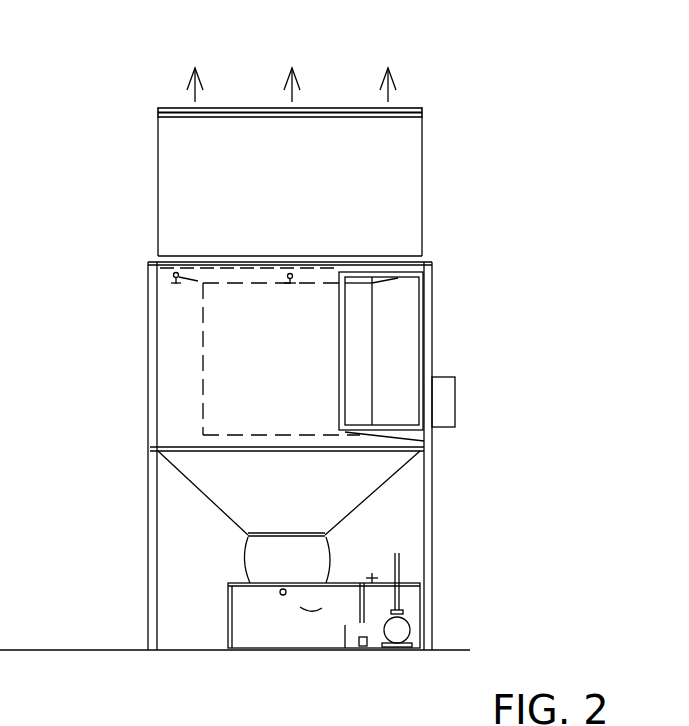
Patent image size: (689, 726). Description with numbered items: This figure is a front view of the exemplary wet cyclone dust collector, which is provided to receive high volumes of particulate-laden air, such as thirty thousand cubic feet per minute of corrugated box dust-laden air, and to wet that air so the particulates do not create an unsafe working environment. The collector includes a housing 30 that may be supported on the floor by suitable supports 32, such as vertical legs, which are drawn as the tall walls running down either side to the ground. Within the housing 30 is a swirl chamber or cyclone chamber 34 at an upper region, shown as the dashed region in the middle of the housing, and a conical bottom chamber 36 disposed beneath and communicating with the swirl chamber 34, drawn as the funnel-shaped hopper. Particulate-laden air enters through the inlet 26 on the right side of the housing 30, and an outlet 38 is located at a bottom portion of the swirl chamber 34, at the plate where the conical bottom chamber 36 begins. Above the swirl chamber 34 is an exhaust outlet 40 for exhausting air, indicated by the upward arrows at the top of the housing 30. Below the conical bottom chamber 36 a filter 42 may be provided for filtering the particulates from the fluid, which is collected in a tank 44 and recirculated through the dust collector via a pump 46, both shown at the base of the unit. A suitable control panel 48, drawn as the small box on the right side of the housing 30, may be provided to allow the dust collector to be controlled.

The inlet 26 is at (408, 275).
The housing 30 is at (128, 398).
The supports 32 is at (147, 567).
The swirl chamber 34 is at (172, 345).
The conical bottom chamber 36 is at (205, 477).
The outlet 38 is at (172, 448).
The exhaust outlet 40 is at (350, 108).
The filter 42 is at (338, 544).
The tank 44 is at (332, 609).
The pump 46 is at (416, 616).
The control panel 48 is at (458, 372).